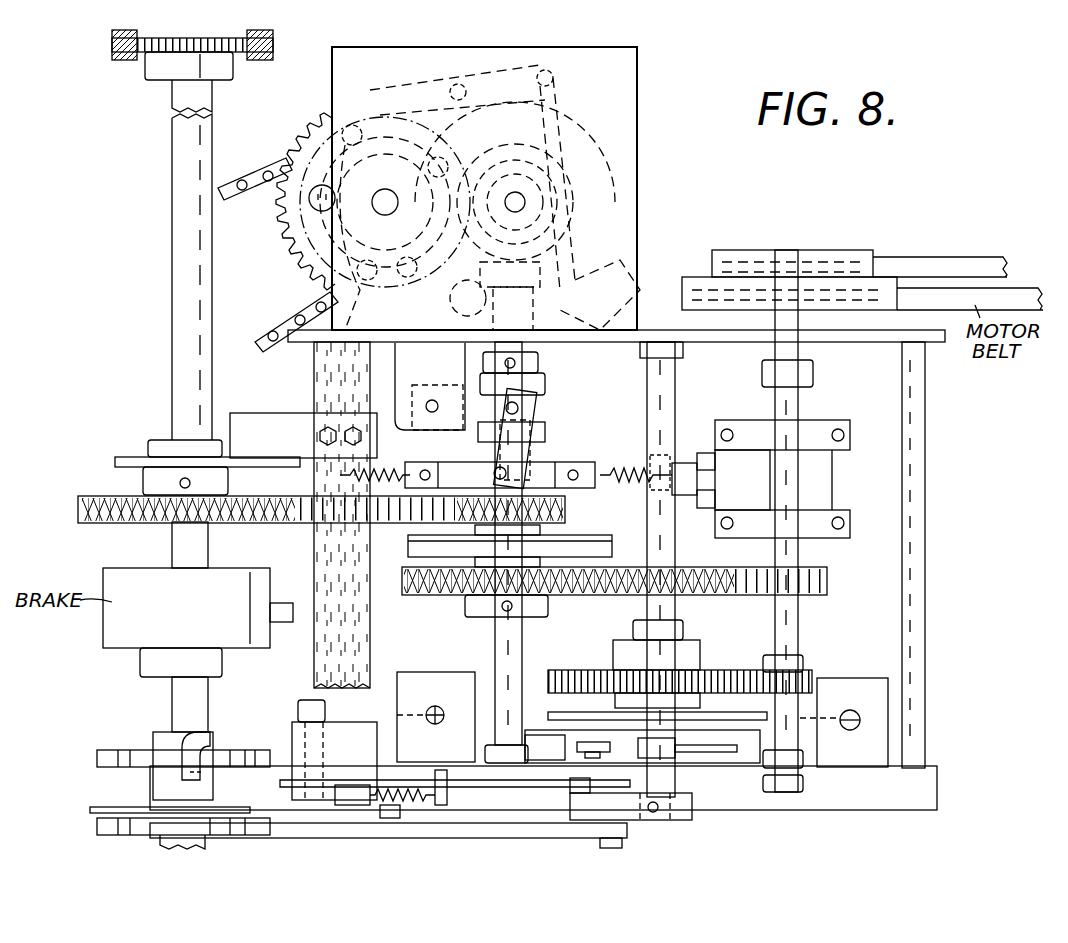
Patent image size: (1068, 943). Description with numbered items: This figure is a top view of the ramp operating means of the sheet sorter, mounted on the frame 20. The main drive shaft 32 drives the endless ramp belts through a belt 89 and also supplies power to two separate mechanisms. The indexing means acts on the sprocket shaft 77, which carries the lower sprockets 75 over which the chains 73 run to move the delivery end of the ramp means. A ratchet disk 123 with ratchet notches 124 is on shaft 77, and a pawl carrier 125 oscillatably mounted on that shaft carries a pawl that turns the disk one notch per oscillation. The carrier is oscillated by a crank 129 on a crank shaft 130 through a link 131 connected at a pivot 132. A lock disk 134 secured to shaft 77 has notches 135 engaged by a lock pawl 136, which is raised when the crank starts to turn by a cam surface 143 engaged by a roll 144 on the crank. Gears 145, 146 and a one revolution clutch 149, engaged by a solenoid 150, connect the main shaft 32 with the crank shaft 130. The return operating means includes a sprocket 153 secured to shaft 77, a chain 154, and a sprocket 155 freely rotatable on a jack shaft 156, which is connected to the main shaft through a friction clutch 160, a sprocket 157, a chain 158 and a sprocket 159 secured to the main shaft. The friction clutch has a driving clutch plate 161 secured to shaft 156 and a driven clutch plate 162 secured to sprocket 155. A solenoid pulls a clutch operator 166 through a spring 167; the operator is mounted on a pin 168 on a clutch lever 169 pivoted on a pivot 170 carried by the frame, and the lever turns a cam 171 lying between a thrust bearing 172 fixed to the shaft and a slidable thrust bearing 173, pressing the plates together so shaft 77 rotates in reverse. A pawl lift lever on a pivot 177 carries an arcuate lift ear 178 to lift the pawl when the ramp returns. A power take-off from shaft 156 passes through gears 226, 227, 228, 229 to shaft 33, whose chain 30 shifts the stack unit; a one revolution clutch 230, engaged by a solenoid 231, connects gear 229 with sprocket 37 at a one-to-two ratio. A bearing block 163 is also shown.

The frame 20 is at (637, 160).
The chain 30 is at (258, 192).
The main drive shaft 32 is at (798, 620).
The shaft 33 is at (380, 206).
The sprocket 37 is at (319, 242).
The chain 73 is at (130, 70).
The lower sprocket 75 is at (112, 45).
The sprocket shaft 77 is at (180, 280).
The belt 89 is at (975, 260).
The ratchet disk 123 is at (97, 827).
The ratchet notches 124 is at (120, 832).
The pawl carrier 125 is at (107, 807).
The crank 129 is at (692, 808).
The crank shaft 130 is at (675, 377).
The link 131 is at (478, 838).
The pivot 132 is at (607, 846).
The lock disk 134 is at (97, 760).
The notches 135 is at (125, 750).
The lock pawl 136 is at (200, 735).
The cam surface 143 is at (631, 808).
The roll 144 is at (570, 790).
The gear 145 is at (803, 672).
The gear 146 is at (596, 662).
The one revolution clutch 149 is at (598, 722).
The solenoid 150 is at (888, 723).
The sprocket 153 is at (117, 489).
The chain 154 is at (78, 508).
The sprocket 155 is at (565, 510).
The jack shaft 156 is at (500, 650).
The sprocket 157 is at (428, 598).
The chain 158 is at (685, 573).
The sprocket 159 is at (816, 567).
The friction clutch 160 is at (398, 555).
The driving clutch plate 161 is at (418, 550).
The driven clutch plate 162 is at (410, 540).
The bearing block 163 is at (830, 485).
The clutch operator 166 is at (440, 470).
The spring 167 is at (615, 478).
The pin 168 is at (492, 472).
The clutch lever 169 is at (515, 465).
The pivot 170 is at (528, 412).
The cam 171 is at (520, 405).
The thrust bearing 172 is at (538, 380).
The thrust bearing 173 is at (545, 435).
The pivot 177 is at (299, 735).
The arcuate lift ear 178 is at (262, 800).
The gear 226 is at (548, 268).
The gear 227 is at (600, 190).
The gear 228 is at (540, 170).
The gear 229 is at (318, 135).
The one revolution clutch 230 is at (312, 208).
The solenoid 231 is at (620, 240).